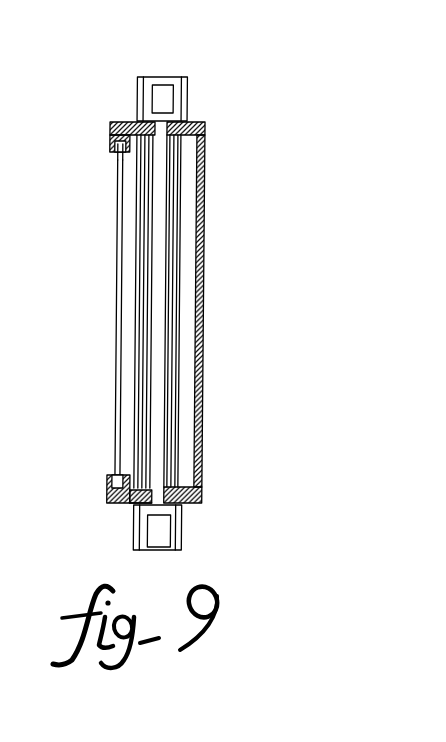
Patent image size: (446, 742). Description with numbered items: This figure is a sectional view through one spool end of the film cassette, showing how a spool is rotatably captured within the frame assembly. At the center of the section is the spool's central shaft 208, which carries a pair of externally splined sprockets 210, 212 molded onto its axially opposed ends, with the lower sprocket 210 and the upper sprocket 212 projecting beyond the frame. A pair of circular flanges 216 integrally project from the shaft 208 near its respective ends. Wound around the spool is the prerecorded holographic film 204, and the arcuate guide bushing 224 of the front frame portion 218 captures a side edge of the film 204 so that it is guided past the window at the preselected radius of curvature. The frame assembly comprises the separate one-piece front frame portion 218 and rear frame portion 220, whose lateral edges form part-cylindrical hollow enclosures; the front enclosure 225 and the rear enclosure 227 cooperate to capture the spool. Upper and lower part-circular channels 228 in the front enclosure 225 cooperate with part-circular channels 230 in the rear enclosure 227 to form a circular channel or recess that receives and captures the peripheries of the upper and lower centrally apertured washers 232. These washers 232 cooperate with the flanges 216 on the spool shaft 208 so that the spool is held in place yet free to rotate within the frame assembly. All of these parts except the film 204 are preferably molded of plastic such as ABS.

The holographic film 204 is at (118, 268).
The central shaft 208 is at (162, 224).
The sprocket 210 is at (181, 537).
The sprocket 212 is at (186, 99).
The circular flanges 216 is at (141, 152).
The front frame portion 218 is at (108, 492).
The rear frame portion 220 is at (200, 352).
The arcuate guide bushing 224 is at (119, 156).
The front enclosure 225 is at (111, 133).
The rear enclosure 227 is at (203, 125).
The part-circular channels 228 is at (179, 492).
The part-circular channels 230 is at (130, 503).
The centrally apertured washers 232 is at (131, 132).